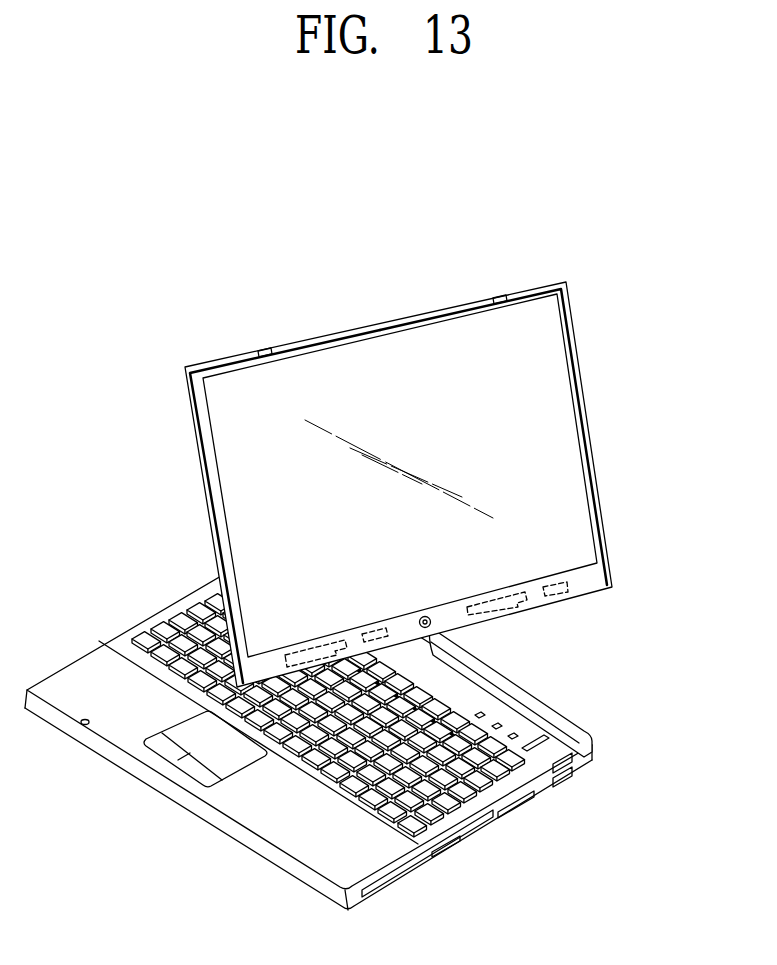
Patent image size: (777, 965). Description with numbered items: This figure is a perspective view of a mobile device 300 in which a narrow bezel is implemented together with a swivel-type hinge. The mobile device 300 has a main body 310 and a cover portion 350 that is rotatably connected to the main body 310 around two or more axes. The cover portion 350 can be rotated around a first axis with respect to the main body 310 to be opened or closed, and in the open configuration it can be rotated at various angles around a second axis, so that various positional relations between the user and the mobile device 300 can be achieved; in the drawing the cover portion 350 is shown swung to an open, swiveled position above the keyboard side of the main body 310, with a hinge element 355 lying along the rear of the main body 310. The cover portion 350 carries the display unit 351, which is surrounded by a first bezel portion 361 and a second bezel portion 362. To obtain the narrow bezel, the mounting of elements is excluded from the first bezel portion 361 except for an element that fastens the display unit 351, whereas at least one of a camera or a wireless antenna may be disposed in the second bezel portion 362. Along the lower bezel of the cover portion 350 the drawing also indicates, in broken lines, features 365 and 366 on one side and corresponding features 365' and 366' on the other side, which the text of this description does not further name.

The mobile device 300 is at (102, 405).
The main body 310 is at (493, 832).
The cover portion 350 is at (590, 369).
The display unit 351 is at (540, 435).
The hinge 355 is at (460, 645).
The first bezel portion 361 is at (202, 422).
The second bezel portion 362 is at (597, 575).
The first coupling recess 365 is at (232, 595).
The second coupling recess 366 is at (252, 560).
The first coupling recess (opposite side) 365' is at (600, 621).
The second coupling recess (opposite side) 366' is at (638, 601).